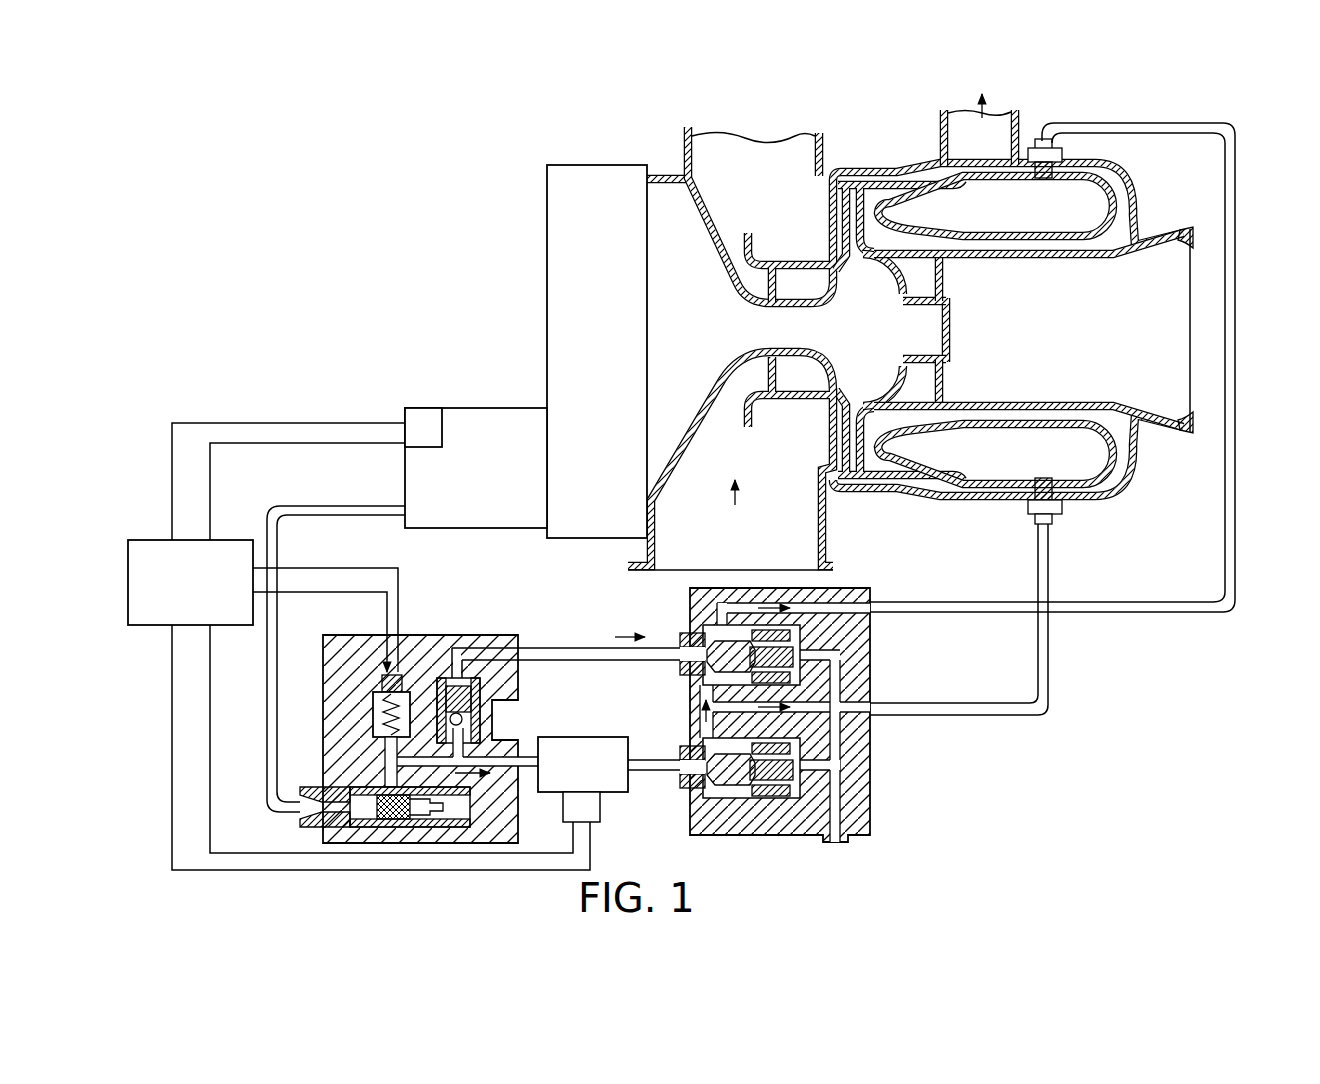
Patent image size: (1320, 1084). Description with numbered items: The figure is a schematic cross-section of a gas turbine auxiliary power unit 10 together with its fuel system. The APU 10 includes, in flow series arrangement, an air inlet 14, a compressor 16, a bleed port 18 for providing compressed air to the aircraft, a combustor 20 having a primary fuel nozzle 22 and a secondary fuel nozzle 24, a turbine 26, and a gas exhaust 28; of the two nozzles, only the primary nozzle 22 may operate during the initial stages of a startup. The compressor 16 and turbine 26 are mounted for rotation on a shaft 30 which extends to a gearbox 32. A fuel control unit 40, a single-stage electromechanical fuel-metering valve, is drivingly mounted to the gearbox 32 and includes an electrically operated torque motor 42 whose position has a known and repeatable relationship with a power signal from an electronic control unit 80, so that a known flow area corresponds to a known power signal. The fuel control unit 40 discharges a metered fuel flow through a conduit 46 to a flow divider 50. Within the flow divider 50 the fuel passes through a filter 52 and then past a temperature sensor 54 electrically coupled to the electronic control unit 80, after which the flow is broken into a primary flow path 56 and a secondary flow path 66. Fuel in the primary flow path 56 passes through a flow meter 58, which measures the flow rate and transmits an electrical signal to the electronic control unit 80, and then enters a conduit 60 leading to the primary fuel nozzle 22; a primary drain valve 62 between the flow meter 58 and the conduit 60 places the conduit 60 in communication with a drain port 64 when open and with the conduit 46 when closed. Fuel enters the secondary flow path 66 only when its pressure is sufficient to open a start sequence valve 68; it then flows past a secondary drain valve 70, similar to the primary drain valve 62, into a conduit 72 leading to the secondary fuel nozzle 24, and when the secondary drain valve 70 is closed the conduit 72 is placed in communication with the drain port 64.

The auxiliary power unit 10 is at (308, 224).
The air inlet 14 is at (800, 552).
The compressor 16 is at (800, 278).
The bleed port 18 is at (1005, 136).
The combustor 20 is at (1080, 200).
The primary fuel nozzle 22 is at (1065, 510).
The secondary fuel nozzle 24 is at (1068, 160).
The turbine 26 is at (921, 290).
The gas exhaust 28 is at (1166, 308).
The shaft 30 is at (868, 318).
The gearbox 32 is at (560, 222).
The fuel control unit 40 is at (508, 408).
The torque motor 42 is at (424, 412).
The conduit 46 is at (368, 505).
The flow divider 50 is at (419, 714).
The filter 52 is at (385, 786).
The temperature sensor 54 is at (373, 712).
The primary flow path 56 is at (637, 773).
The flow meter 58 is at (616, 800).
The conduit 60 is at (912, 718).
The primary drain valve 62 is at (799, 741).
The drain port 64 is at (836, 842).
The secondary flow path 66 is at (592, 645).
The start sequence valve 68 is at (482, 718).
The secondary drain valve 70 is at (806, 650).
The conduit 72 is at (1085, 613).
The electronic control unit 80 is at (158, 540).